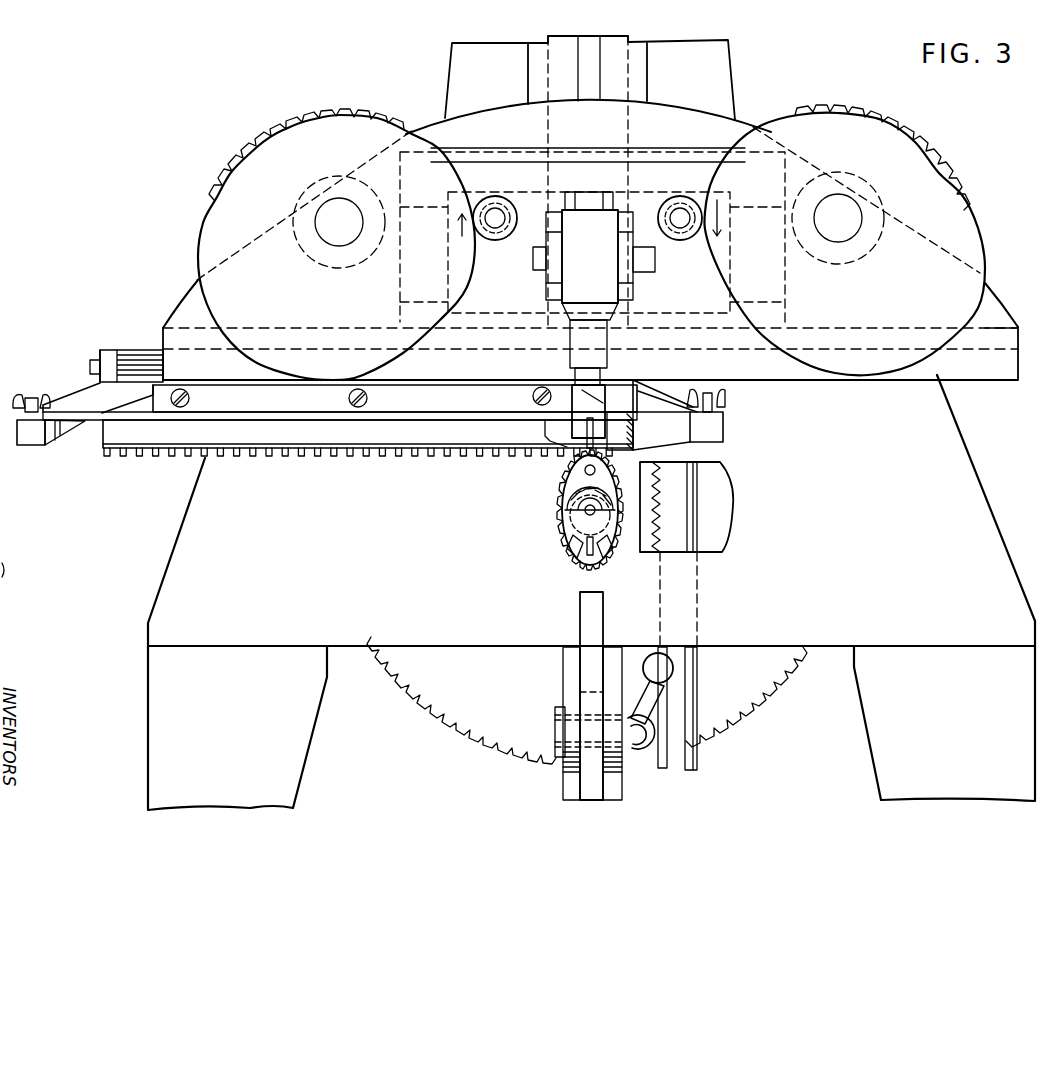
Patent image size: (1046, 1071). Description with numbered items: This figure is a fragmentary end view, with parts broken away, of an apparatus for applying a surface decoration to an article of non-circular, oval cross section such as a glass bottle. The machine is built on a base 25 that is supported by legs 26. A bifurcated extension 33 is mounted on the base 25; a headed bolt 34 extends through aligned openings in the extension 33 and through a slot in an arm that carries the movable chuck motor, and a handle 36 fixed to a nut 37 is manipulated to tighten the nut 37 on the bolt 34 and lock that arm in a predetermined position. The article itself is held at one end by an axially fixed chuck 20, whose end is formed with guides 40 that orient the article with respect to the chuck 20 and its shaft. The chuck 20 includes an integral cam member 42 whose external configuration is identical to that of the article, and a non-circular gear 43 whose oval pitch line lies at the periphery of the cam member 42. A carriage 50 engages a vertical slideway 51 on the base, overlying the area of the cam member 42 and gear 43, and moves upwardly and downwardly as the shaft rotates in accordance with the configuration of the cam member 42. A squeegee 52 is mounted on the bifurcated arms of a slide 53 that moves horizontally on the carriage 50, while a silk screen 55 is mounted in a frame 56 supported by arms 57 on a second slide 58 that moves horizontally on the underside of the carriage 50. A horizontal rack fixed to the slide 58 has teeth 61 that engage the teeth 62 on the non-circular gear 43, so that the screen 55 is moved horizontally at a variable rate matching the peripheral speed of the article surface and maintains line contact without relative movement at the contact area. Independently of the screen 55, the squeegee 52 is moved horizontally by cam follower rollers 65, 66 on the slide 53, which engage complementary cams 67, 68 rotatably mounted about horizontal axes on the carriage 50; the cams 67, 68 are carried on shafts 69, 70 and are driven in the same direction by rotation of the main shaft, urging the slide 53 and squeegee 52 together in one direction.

The axially fixed chuck 20 is at (572, 533).
The base 25 is at (591, 510).
The legs 26 is at (293, 720).
The bifurcated extension 33 is at (568, 677).
The headed bolt 34 is at (560, 718).
The handle 36 is at (662, 690).
The nut 37 is at (627, 755).
The guides 40 is at (578, 550).
The cam member 42 is at (562, 487).
The gear 43 is at (550, 529).
The carriage 50 is at (745, 76).
The vertical slideway 51 is at (631, 44).
The squeegee 52 is at (567, 468).
The slide 53 is at (547, 287).
The silk screen 55 is at (550, 438).
The frame 56 is at (635, 428).
The arms 57 is at (73, 400).
The slide 58 is at (128, 355).
The teeth 61 is at (158, 457).
The teeth 62 is at (558, 512).
The cam follower roller 65 is at (497, 202).
The cam follower roller 66 is at (670, 202).
The cam 67 is at (297, 140).
The cam 68 is at (863, 130).
The shaft 69 is at (328, 207).
The shaft 70 is at (842, 203).